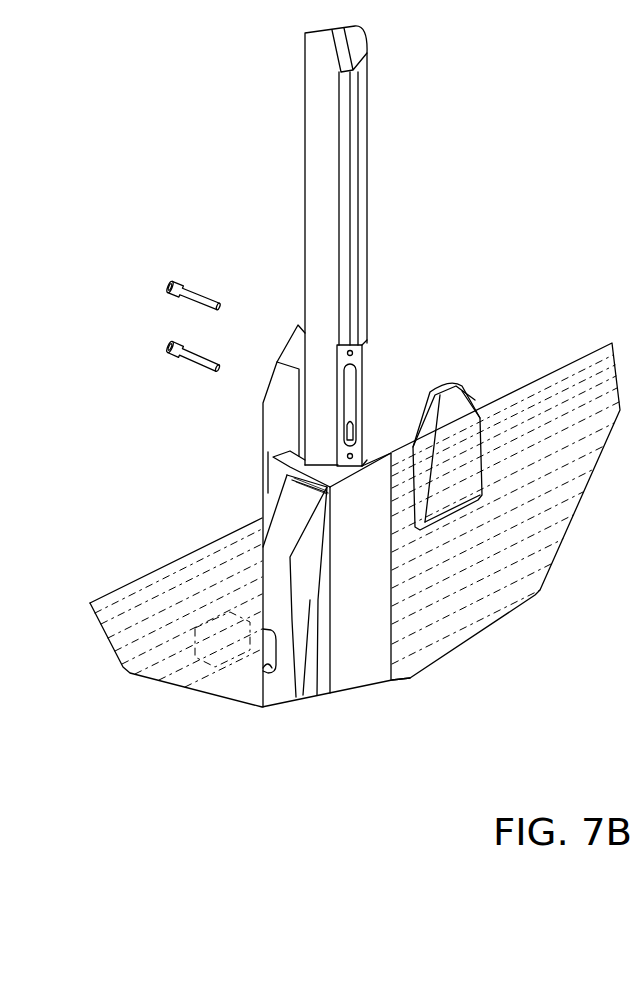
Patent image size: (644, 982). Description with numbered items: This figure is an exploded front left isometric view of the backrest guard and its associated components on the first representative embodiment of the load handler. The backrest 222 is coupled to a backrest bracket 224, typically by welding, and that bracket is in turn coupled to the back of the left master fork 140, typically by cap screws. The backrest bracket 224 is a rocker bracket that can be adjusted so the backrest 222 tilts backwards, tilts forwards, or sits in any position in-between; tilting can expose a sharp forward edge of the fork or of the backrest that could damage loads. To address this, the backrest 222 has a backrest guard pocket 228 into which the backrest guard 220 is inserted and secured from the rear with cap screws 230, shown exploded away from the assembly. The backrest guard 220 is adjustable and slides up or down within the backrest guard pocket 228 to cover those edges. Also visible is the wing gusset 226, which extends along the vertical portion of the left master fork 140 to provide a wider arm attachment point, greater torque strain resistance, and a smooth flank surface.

The first (left) master fork 140 is at (357, 660).
The backrest guard 220 is at (450, 418).
The backrest 222 is at (323, 238).
The backrest bracket 224 is at (262, 433).
The wing gusset 226 is at (282, 594).
The backrest guard pocket 228 is at (354, 351).
The cap screws 230 is at (168, 283).